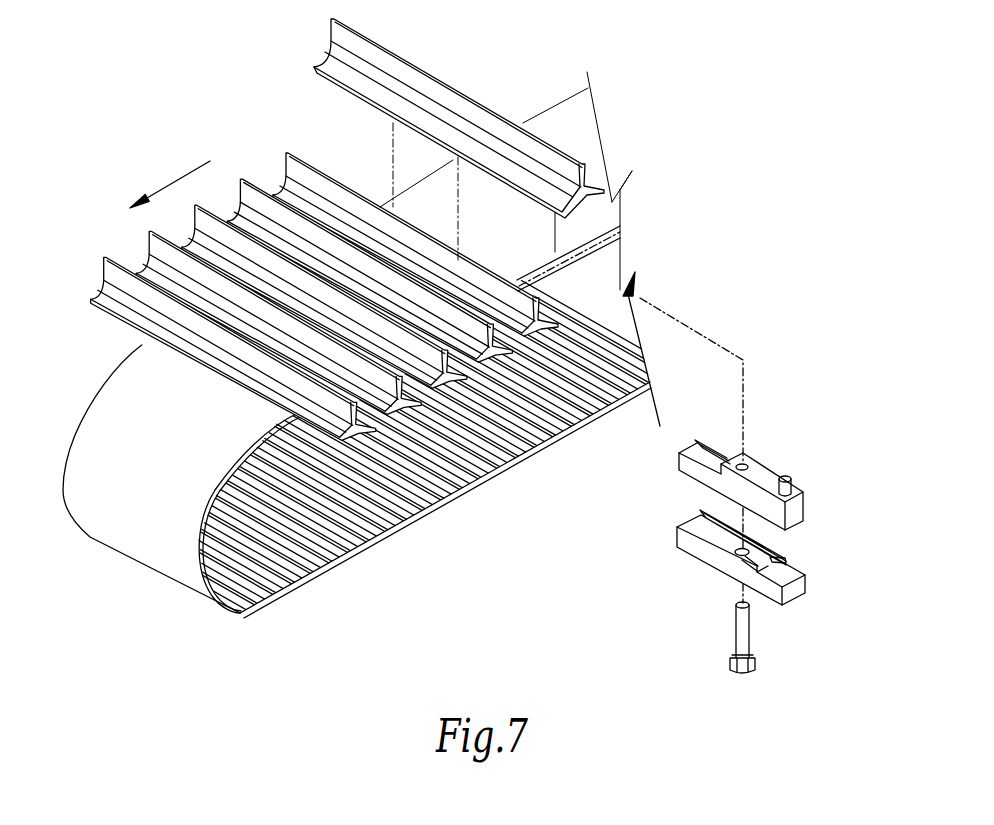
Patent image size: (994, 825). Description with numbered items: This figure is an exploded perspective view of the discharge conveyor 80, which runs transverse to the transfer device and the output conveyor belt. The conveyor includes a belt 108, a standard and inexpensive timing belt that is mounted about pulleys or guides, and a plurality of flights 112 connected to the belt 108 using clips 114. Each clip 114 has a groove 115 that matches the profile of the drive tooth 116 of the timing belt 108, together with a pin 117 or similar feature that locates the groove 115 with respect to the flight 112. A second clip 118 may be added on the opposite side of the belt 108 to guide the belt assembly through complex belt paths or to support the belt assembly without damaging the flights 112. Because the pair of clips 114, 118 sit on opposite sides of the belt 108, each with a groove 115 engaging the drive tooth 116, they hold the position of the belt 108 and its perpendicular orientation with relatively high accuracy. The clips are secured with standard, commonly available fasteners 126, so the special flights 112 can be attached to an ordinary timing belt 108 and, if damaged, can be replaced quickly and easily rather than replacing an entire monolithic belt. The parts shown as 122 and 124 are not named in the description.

The discharge conveyor 80 is at (540, 63).
The belt 108 is at (573, 129).
The flight 112 is at (422, 69).
The clip 114 is at (775, 556).
The groove 115 is at (690, 447).
The drive tooth 116 is at (604, 265).
The pin 117 is at (793, 483).
The second clip 118 is at (761, 557).
The upper clamp block 122 is at (767, 484).
The aperture 124 is at (748, 552).
The fastener 126 is at (735, 641).